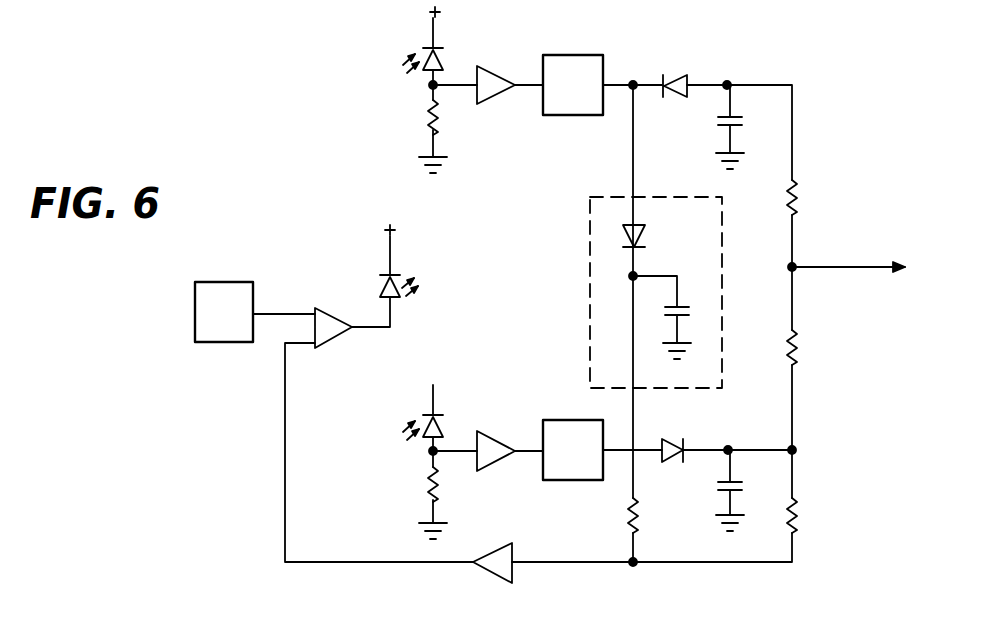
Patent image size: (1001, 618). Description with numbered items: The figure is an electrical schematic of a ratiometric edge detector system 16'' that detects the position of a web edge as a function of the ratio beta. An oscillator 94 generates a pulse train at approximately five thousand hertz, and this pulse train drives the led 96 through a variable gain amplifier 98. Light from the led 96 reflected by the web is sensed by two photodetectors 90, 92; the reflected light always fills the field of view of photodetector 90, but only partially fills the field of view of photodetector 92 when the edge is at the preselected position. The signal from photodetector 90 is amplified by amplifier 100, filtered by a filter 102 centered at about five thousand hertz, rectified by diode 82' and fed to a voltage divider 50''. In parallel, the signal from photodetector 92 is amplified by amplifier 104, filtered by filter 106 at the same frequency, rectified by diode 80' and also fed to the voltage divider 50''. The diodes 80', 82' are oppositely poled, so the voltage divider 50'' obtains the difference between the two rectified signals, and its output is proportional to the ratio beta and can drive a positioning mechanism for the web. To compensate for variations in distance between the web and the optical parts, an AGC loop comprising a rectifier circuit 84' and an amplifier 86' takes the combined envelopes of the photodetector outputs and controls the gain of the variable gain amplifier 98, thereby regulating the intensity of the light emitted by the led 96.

The edge detector system 16'' is at (333, 161).
The photodetector 90 is at (445, 62).
The amplifier 100 is at (490, 100).
The filter 102 is at (571, 108).
The diode 82' is at (664, 106).
The voltage divider 50'' is at (769, 340).
The rectifier circuit 84' is at (627, 292).
The photodetector 92 is at (447, 425).
The amplifier 104 is at (507, 427).
The filter 106 is at (552, 427).
The diode 80' is at (691, 432).
The amplifier 86' is at (488, 546).
The oscillator 94 is at (227, 292).
The variable gain amplifier 98 is at (318, 310).
The led 96 is at (382, 290).